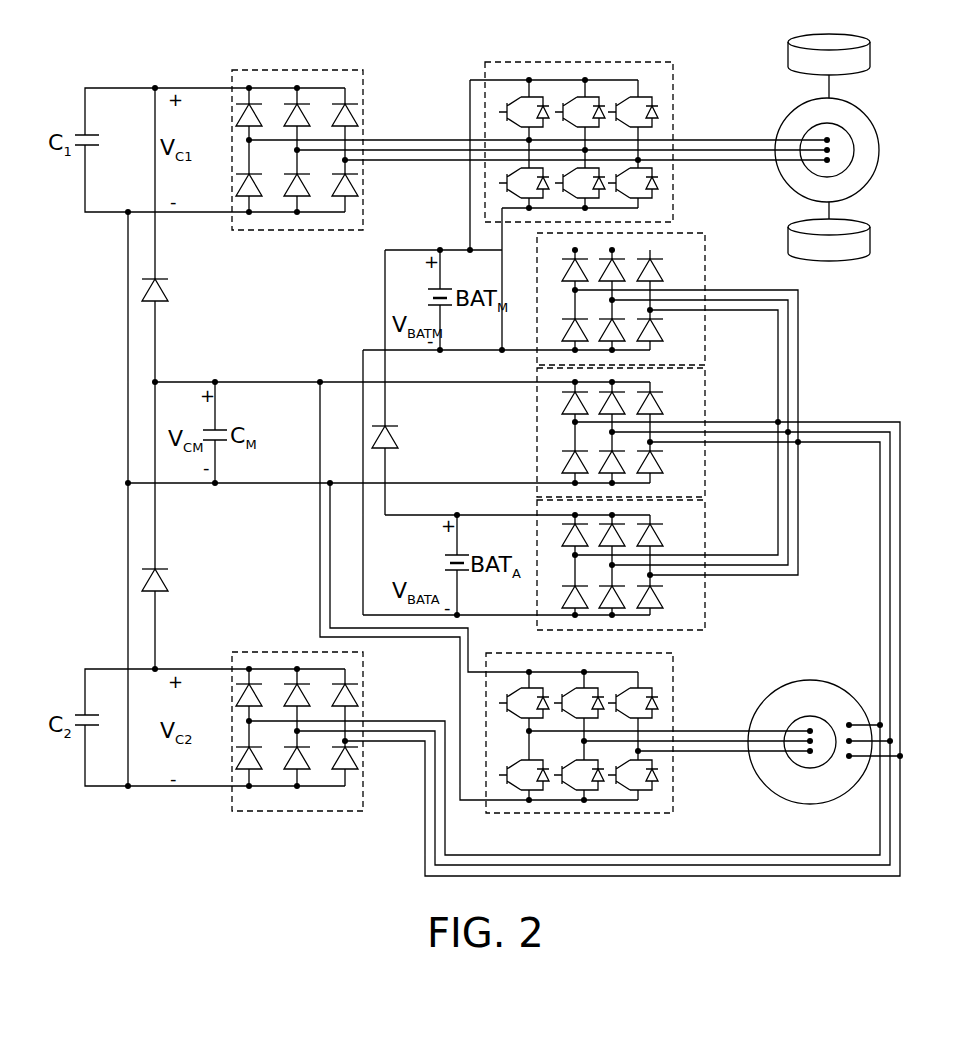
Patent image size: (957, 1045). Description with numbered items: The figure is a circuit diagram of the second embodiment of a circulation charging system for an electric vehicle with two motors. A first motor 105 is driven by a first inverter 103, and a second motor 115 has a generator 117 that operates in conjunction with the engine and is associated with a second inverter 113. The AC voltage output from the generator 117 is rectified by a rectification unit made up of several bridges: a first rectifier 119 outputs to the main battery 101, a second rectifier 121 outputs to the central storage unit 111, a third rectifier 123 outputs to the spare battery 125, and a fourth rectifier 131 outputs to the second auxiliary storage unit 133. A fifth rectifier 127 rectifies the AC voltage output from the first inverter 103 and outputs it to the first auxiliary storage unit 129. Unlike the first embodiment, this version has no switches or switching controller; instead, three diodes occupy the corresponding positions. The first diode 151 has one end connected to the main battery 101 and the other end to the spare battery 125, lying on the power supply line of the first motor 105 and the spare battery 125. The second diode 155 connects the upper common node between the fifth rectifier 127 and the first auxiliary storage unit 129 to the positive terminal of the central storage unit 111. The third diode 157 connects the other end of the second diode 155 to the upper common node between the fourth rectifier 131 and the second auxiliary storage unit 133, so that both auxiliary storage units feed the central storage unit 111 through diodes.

The main battery 101 is at (432, 286).
The first inverter 103 is at (623, 62).
The first motor 105 is at (879, 150).
The central storage unit 111 is at (220, 428).
The second inverter 113 is at (675, 690).
The second motor 115 is at (812, 768).
The generator 117 is at (812, 680).
The first rectifier 119 is at (705, 265).
The second rectifier 121 is at (705, 398).
The third rectifier 123 is at (705, 531).
The spare battery 125 is at (445, 560).
The fifth rectifier 127 is at (303, 70).
The first auxiliary storage unit 129 is at (95, 130).
The fourth rectifier 131 is at (365, 688).
The second auxiliary storage unit 133 is at (75, 735).
The first diode 151 is at (398, 438).
The second diode 155 is at (168, 290).
The third diode 157 is at (168, 582).